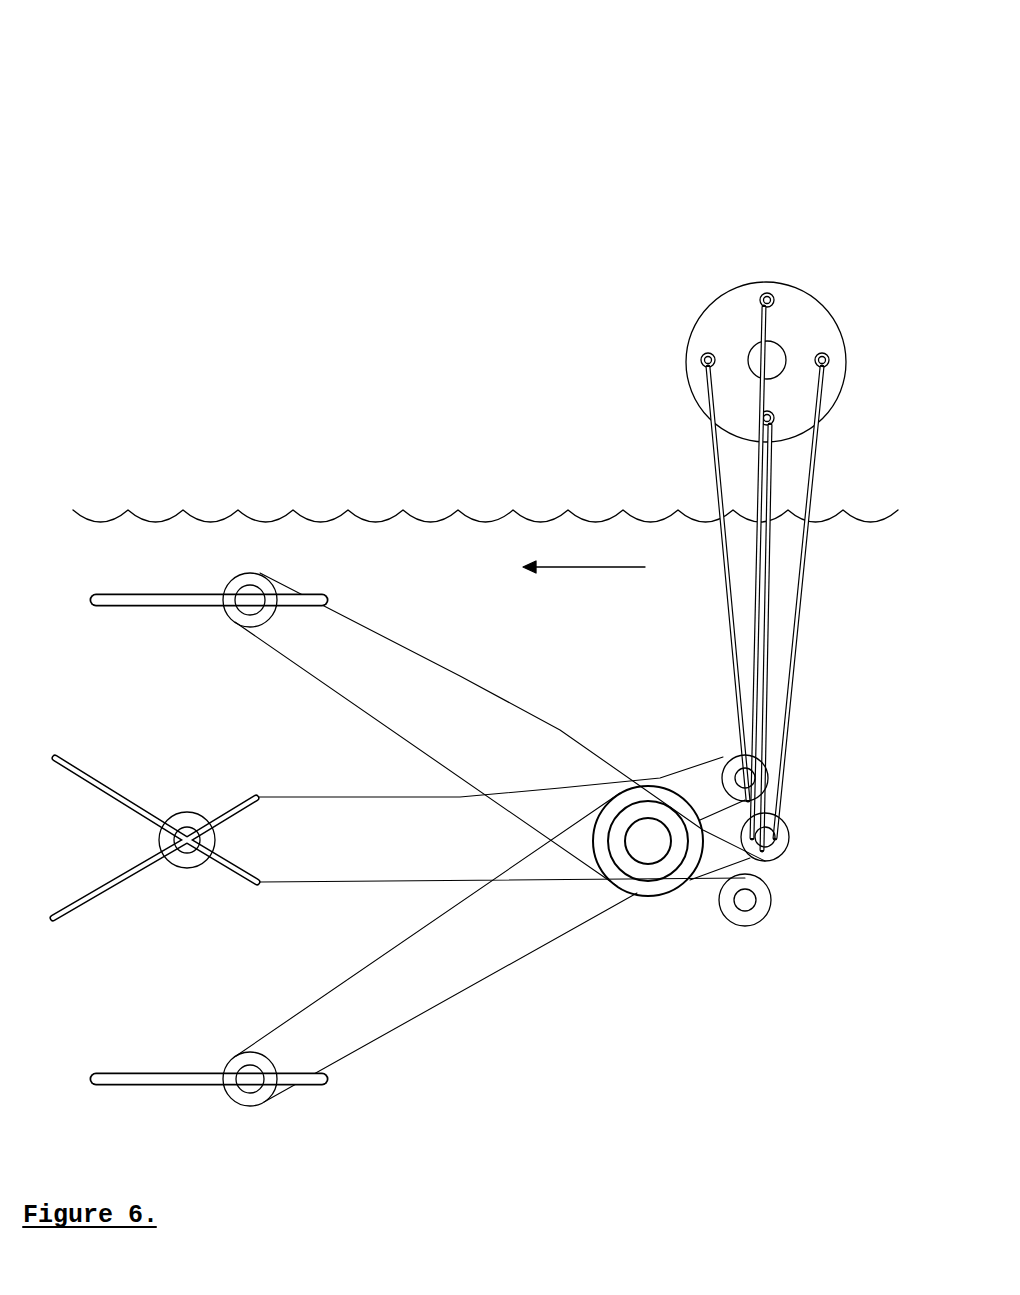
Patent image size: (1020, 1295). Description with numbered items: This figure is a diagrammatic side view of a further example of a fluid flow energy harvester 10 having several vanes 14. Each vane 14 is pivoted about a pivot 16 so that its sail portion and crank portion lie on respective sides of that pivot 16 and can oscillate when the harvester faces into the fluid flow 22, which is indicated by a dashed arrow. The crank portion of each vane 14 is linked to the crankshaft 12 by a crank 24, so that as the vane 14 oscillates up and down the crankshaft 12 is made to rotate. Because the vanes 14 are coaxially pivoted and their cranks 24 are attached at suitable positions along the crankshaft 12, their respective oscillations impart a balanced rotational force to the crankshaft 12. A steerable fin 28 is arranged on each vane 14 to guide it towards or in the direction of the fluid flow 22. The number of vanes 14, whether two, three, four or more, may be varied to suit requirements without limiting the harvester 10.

The fluid flow energy harvester 10 is at (150, 272).
The crankshaft 12 is at (754, 285).
The vane 14 is at (428, 964).
The pivot 16 is at (650, 842).
The fluid flow 22 is at (592, 567).
The crank 24 is at (728, 530).
The fin 28 is at (85, 897).